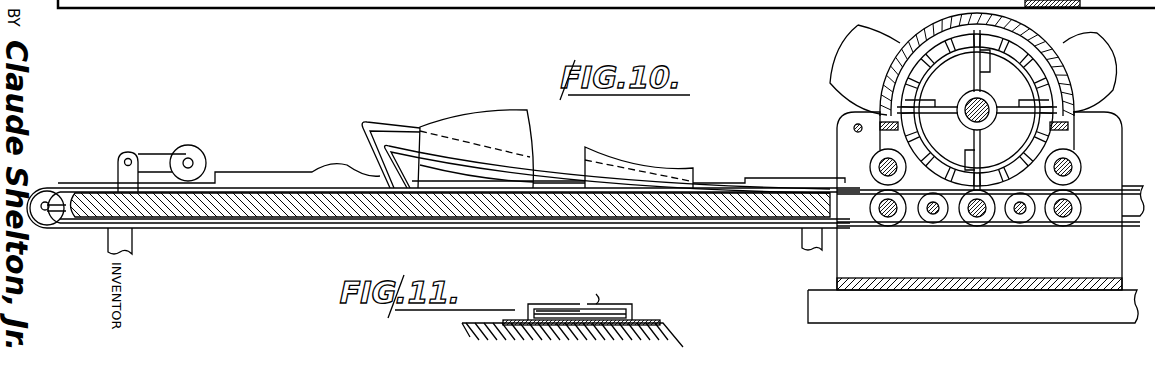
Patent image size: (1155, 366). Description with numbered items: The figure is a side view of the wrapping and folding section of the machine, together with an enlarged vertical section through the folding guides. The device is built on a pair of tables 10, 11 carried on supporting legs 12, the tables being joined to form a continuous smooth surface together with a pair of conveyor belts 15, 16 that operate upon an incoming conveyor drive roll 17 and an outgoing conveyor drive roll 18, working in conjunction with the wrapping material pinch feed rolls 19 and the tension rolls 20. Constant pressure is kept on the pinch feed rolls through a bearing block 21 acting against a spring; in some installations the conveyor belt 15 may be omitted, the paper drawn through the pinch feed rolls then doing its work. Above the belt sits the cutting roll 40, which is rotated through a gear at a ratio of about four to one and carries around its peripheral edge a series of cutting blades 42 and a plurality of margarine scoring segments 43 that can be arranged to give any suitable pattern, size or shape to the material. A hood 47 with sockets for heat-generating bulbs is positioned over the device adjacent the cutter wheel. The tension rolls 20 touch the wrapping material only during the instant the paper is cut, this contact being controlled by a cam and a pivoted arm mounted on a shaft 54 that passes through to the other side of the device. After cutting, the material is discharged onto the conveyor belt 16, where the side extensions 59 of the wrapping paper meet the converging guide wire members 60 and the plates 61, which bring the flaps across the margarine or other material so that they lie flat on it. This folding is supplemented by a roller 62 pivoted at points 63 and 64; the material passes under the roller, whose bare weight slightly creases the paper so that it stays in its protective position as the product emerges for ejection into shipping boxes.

In FIG. 10, the table 10 is at (1138, 216).
In FIG. 10, the table 11 is at (656, 205).
In FIG. 11, the table 11 is at (684, 292).
In FIG. 10, the supporting legs 12 is at (130, 245).
In FIG. 10, the conveyor belt 15 is at (1088, 228).
In FIG. 10, the conveyor belt 16 is at (577, 221).
In FIG. 11, the conveyor belt 16 is at (610, 322).
In FIG. 10, the incoming conveyor drive roll 17 is at (1018, 216).
In FIG. 10, the outgoing conveyor drive roll 18 is at (931, 216).
In FIG. 10, the wrapping material pinch feed rolls 19 is at (1074, 203).
In FIG. 10, the tension rolls 20 is at (876, 195).
In FIG. 10, the bearing block 21 is at (1072, 152).
In FIG. 10, the cutting roll 40 is at (1036, 99).
In FIG. 10, the cutting blades 42 is at (885, 102).
In FIG. 10, the margarine scoring segments 43 is at (985, 50).
In FIG. 10, the hood 47 is at (858, 40).
In FIG. 10, the shaft 54 is at (853, 128).
In FIG. 10, the side extensions 59 is at (492, 122).
In FIG. 10, the converging guide wire members 60 is at (402, 126).
In FIG. 10, the plates 61 is at (278, 183).
In FIG. 11, the plates 61 is at (566, 308).
In FIG. 10, the roller 62 is at (184, 150).
In FIG. 10, the pivot 63 is at (194, 161).
In FIG. 10, the pivot 64 is at (128, 151).